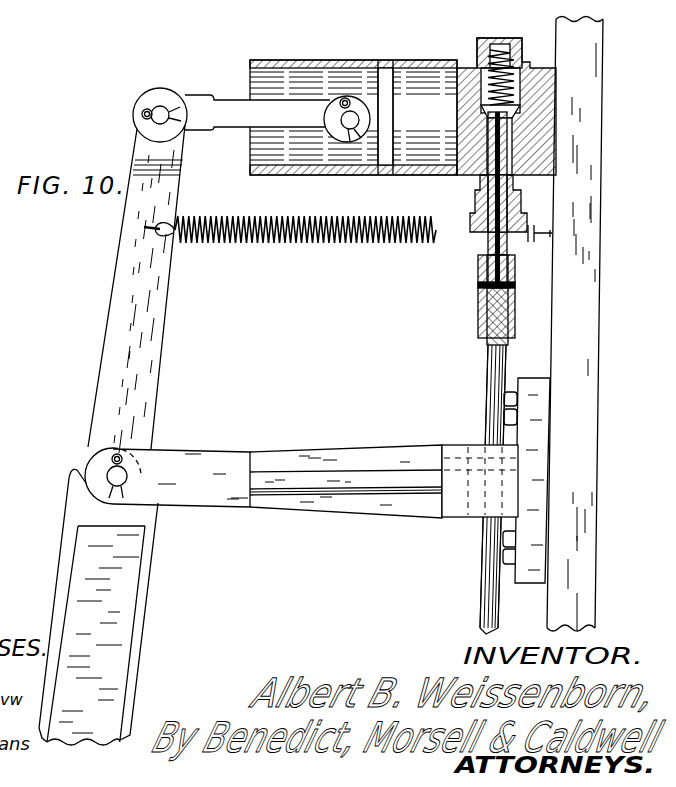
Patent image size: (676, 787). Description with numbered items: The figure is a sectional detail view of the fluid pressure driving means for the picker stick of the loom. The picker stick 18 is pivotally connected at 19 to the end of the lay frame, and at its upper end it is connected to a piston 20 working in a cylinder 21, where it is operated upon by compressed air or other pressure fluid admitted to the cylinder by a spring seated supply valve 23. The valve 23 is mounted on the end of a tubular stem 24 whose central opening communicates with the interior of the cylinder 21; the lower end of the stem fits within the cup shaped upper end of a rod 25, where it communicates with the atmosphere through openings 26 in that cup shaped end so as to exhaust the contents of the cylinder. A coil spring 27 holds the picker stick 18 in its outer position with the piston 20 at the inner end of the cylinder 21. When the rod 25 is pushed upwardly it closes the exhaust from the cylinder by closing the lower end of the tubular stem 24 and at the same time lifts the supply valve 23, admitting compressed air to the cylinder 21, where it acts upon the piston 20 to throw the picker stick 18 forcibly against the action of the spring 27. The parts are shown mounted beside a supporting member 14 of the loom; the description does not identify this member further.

The support board 14 is at (586, 213).
The picker stick 18 is at (105, 355).
The pivotal connection 19 is at (177, 455).
The piston 20 is at (386, 118).
The cylinder 21 is at (407, 68).
The supply valve 23 is at (473, 108).
The tubular stem 24 is at (488, 244).
The rod 25 is at (489, 370).
The openings 26 is at (479, 285).
The coil spring 27 is at (316, 246).